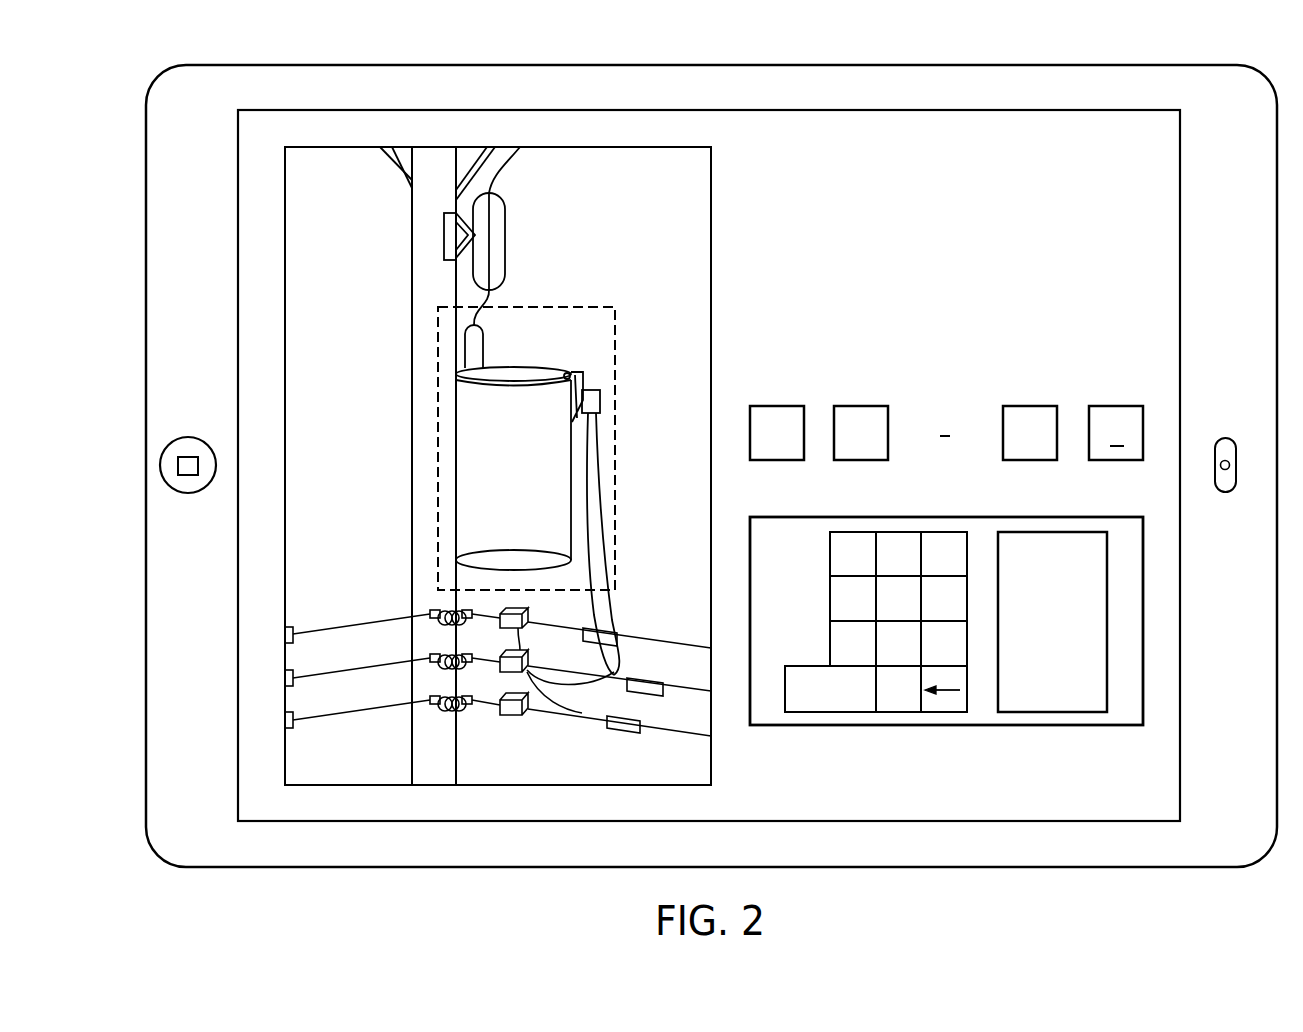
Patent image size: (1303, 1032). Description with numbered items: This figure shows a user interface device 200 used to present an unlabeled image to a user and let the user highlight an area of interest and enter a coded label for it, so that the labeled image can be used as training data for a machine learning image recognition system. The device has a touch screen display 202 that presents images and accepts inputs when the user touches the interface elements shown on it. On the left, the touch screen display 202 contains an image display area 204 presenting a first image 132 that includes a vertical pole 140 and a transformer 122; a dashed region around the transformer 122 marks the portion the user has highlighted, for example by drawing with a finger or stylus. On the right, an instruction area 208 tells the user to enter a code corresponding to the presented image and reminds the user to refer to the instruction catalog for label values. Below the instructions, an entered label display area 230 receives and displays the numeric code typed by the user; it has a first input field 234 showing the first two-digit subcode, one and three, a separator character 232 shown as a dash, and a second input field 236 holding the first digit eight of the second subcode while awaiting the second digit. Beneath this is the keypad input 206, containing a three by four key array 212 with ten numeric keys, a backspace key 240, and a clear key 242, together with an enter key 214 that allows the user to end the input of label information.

The user interface device 200 is at (130, 27).
The touch screen display 202 is at (146, 673).
The image display area 204 is at (470, 798).
The keypad input 206 is at (1010, 617).
The instruction area 208 is at (1162, 247).
The key array 212 is at (865, 617).
The enter key 214 is at (1052, 712).
The entered label display area 230 is at (961, 397).
The separator character 232 is at (949, 380).
The first input field 234 is at (756, 383).
The second input field 236 is at (1097, 384).
The backspace key 240 is at (942, 712).
The clear key 242 is at (830, 712).
The transformer 122 is at (462, 484).
The first image 132 is at (438, 450).
The vertical pole 140 is at (420, 733).